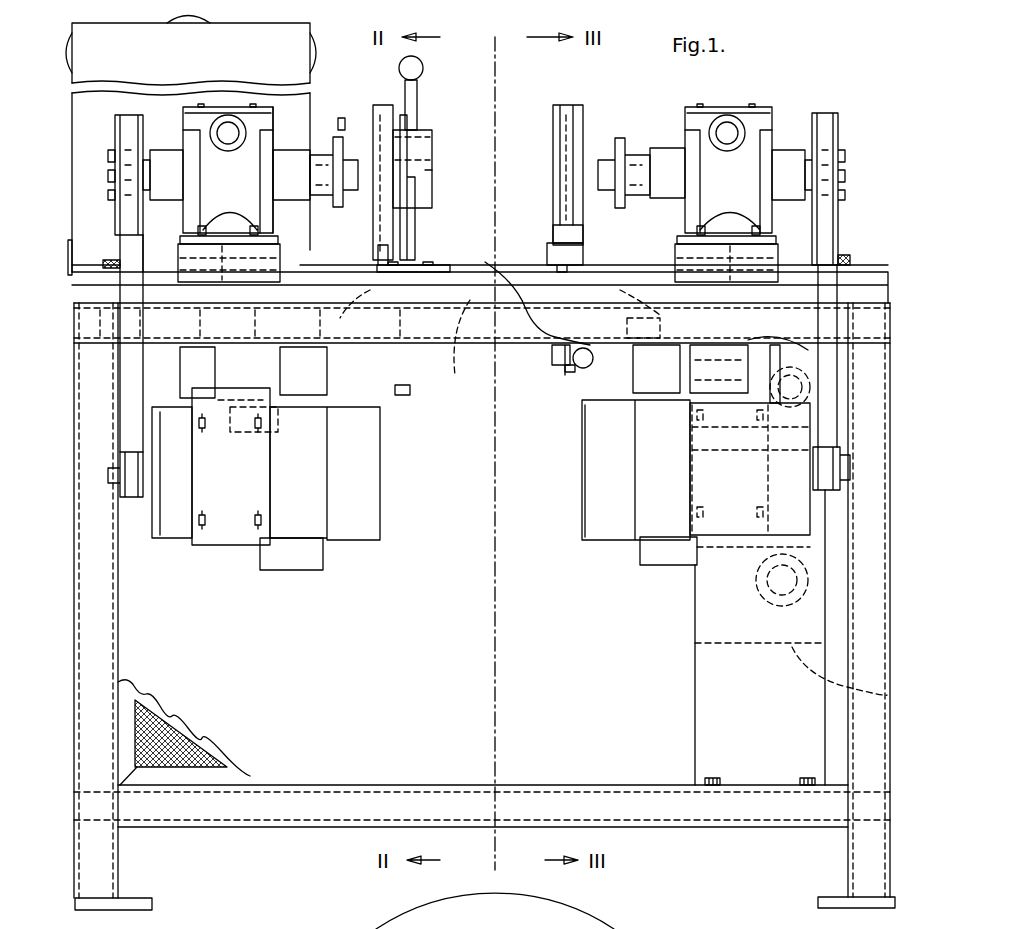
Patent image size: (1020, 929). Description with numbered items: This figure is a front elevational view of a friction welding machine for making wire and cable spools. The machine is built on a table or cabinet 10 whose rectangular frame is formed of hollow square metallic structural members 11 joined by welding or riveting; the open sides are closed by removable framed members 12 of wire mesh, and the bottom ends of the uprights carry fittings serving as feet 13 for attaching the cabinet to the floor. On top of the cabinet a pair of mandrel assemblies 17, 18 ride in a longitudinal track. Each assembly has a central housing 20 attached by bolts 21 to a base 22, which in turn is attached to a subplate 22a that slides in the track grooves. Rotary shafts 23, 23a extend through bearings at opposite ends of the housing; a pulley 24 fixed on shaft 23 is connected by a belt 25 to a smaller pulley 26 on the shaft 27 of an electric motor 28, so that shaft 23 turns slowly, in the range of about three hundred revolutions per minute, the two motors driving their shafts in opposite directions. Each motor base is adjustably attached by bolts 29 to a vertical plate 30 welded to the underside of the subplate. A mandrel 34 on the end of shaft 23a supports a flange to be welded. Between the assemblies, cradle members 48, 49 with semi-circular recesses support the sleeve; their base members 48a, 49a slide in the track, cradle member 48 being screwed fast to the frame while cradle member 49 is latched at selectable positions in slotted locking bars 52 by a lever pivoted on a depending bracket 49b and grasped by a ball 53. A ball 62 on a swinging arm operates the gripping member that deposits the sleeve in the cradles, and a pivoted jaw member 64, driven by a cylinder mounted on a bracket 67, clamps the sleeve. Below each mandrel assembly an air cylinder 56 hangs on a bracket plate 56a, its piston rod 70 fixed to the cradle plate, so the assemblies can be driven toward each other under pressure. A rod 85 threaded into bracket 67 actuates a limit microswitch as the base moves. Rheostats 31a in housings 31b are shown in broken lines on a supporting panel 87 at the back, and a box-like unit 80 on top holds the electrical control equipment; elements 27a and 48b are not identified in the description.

The cabinet 10 is at (474, 591).
The structural members 11 is at (110, 675).
The framed members of wire mesh 12 is at (170, 725).
The feet 13 is at (133, 902).
The mandrel assembly 17 is at (286, 128).
The mandrel assembly 18 is at (675, 110).
The central housing 20 is at (207, 150).
The bolts 21 is at (196, 232).
The base 22 is at (270, 262).
The subplate 22a is at (752, 367).
The rotary shaft 23 is at (150, 175).
The rotary shaft 23a is at (338, 118).
The pulley 24 is at (125, 138).
The belt 25 is at (120, 249).
The smaller pulley 26 is at (108, 470).
The motor shaft 27 is at (108, 490).
The belt opening 27a is at (179, 325).
The electric motor 28 is at (380, 495).
The bolts 29 is at (258, 518).
The plate 30 is at (198, 401).
The rheostat 31a is at (810, 387).
The housings 31b is at (864, 679).
The mandrel 34 is at (322, 207).
The cradle member 48 is at (393, 218).
The base member 48a is at (340, 315).
The bracket arm 48b is at (412, 401).
The cradle member 49 is at (553, 237).
The base member 49a is at (675, 314).
The bracket 49b is at (565, 372).
The locking bars 52 is at (461, 351).
The ball 53 is at (523, 294).
The air cylinder 56 is at (327, 410).
The bracket plate 56a is at (215, 347).
The ball 62 is at (424, 64).
The jaw member 64 is at (418, 102).
The bracket 67 is at (547, 263).
The piston rod 70 is at (290, 370).
The box-like unit 80 is at (95, 178).
The rod 85 is at (115, 270).
The supporting panel 87 is at (712, 708).